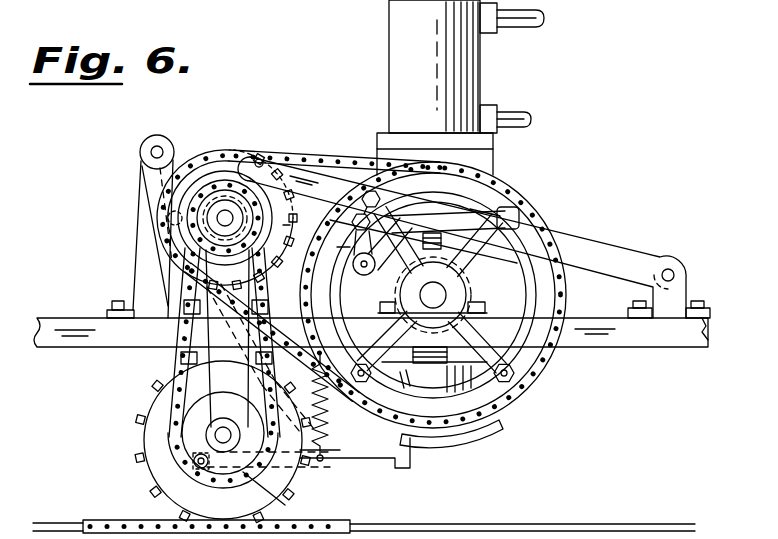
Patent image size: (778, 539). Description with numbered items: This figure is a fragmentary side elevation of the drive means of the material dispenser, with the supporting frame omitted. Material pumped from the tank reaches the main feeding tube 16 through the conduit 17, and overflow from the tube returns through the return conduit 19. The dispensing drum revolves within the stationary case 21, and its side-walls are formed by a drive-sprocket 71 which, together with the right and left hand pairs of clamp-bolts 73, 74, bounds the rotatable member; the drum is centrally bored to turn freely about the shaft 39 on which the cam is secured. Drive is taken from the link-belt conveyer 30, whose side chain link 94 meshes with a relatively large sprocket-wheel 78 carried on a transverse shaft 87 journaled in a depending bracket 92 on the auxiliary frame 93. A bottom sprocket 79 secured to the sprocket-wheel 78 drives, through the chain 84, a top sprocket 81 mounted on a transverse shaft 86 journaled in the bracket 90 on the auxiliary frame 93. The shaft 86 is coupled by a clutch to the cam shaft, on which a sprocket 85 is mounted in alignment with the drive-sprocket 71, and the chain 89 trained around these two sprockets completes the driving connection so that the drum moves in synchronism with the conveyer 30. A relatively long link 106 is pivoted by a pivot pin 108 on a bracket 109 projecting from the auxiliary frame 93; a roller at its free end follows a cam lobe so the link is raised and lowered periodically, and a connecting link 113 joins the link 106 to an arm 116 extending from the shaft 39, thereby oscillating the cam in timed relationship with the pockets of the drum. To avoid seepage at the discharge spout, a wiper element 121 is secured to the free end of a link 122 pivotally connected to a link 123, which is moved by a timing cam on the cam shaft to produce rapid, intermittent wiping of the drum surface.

The main feeding tube 16 is at (386, 45).
The conduit 17 is at (512, 118).
The return conduit 19 is at (536, 28).
The stationary case 21 is at (515, 161).
The link-belt conveyer 30 is at (572, 522).
The shaft 39 is at (436, 295).
The drive-sprocket 71 is at (548, 378).
The clamp-bolts 73 is at (542, 203).
The clamp-bolts 74 is at (359, 381).
The sprocket-wheel 78 is at (292, 480).
The bottom sprocket 79 is at (278, 494).
The top sprocket 81 is at (268, 262).
The chain 84 is at (172, 396).
The sprocket 85 is at (283, 225).
The transverse shaft 86 is at (228, 240).
The transverse shaft 87 is at (175, 446).
The chain 89 is at (320, 152).
The bracket 90 is at (218, 233).
The depending bracket 92 is at (222, 436).
The auxiliary frame 93 is at (628, 346).
The side chain link 94 is at (350, 520).
The link 106 is at (600, 247).
The pivot pin 108 is at (672, 274).
The bracket 109 is at (658, 294).
The connecting link 113 is at (376, 256).
The arm 116 is at (337, 248).
The wiper element 121 is at (414, 458).
The link 122 is at (398, 470).
The link 123 is at (133, 283).